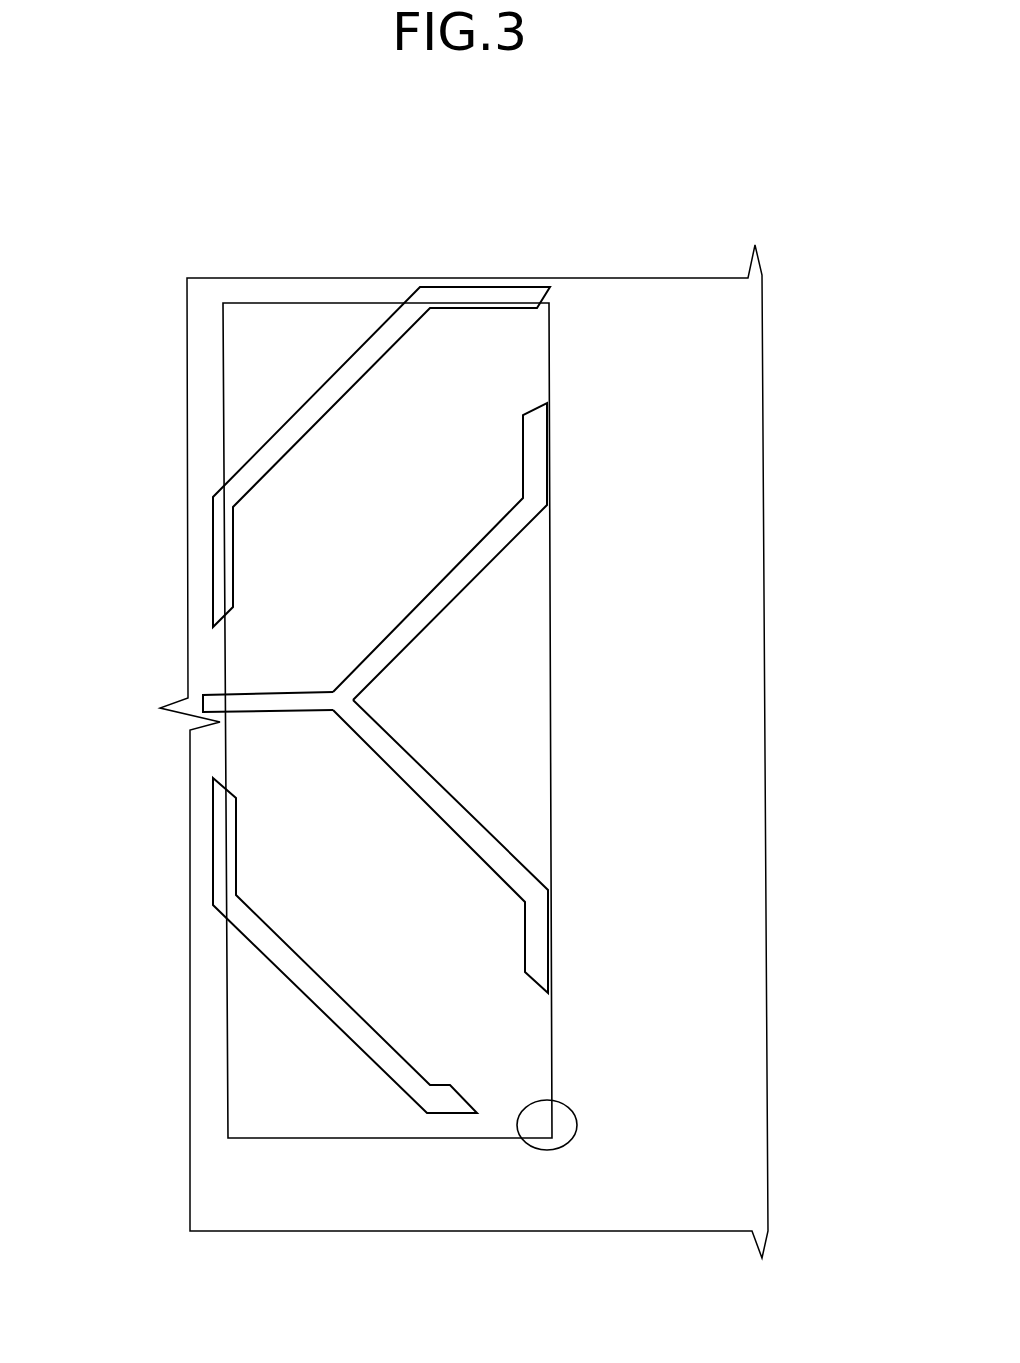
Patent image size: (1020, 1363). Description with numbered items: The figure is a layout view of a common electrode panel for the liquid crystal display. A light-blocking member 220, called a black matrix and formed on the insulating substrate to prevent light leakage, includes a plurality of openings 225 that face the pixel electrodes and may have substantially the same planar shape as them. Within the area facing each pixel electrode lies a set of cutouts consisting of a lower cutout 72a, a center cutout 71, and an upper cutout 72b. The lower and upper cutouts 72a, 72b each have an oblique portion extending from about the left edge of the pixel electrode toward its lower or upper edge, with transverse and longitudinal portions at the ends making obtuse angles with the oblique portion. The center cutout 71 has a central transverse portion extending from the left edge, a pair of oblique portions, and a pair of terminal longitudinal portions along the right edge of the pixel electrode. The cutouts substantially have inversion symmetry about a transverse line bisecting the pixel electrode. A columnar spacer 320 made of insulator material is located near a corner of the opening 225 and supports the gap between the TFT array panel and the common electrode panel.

The light-blocking member 220 is at (480, 1231).
The openings 225 is at (266, 1052).
The center cutout 71 is at (253, 693).
The lower cutout 72a is at (213, 839).
The upper cutout 72b is at (213, 559).
The columnar spacers 320 is at (567, 1141).